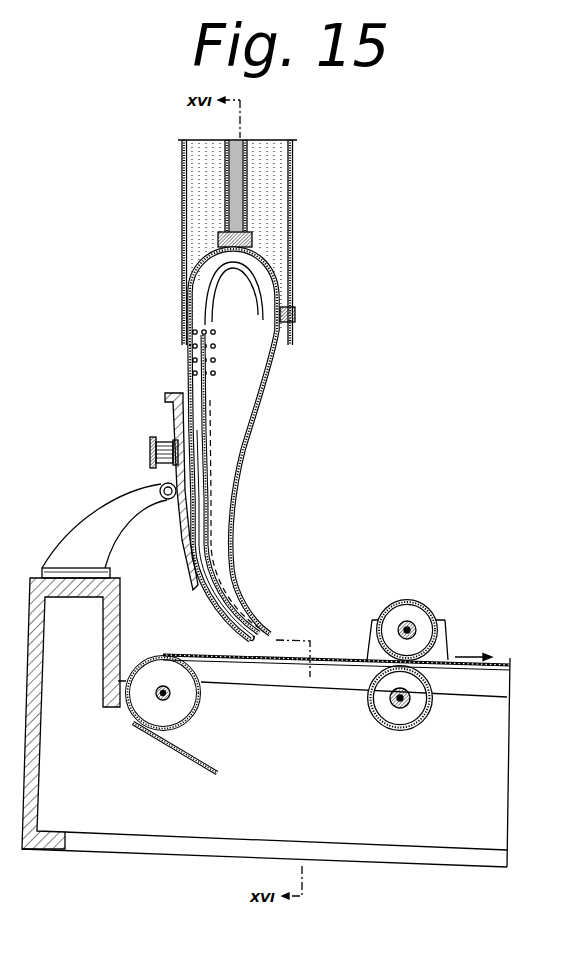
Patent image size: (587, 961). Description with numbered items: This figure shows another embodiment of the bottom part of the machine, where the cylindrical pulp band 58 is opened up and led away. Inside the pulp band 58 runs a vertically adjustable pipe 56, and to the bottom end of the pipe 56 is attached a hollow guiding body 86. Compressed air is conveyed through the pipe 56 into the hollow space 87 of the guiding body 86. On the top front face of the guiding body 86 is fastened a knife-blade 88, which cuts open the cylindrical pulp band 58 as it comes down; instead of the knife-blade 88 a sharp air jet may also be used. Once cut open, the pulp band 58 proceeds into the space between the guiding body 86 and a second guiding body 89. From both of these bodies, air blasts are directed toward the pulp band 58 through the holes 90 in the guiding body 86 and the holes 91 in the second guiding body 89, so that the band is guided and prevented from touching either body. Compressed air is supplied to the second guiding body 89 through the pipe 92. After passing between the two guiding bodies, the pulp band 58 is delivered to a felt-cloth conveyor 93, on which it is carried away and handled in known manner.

The pipe 56 is at (250, 153).
The pulp band 58 is at (182, 172).
The hollow guiding body 86 is at (202, 258).
The hollow space 87 is at (215, 290).
The knife-blade 88 is at (295, 316).
The second guiding body 89 is at (168, 393).
The holes 90 is at (210, 458).
The holes 91 is at (207, 590).
The pipe 92 is at (150, 453).
The felt-cloth conveyor 93 is at (272, 662).